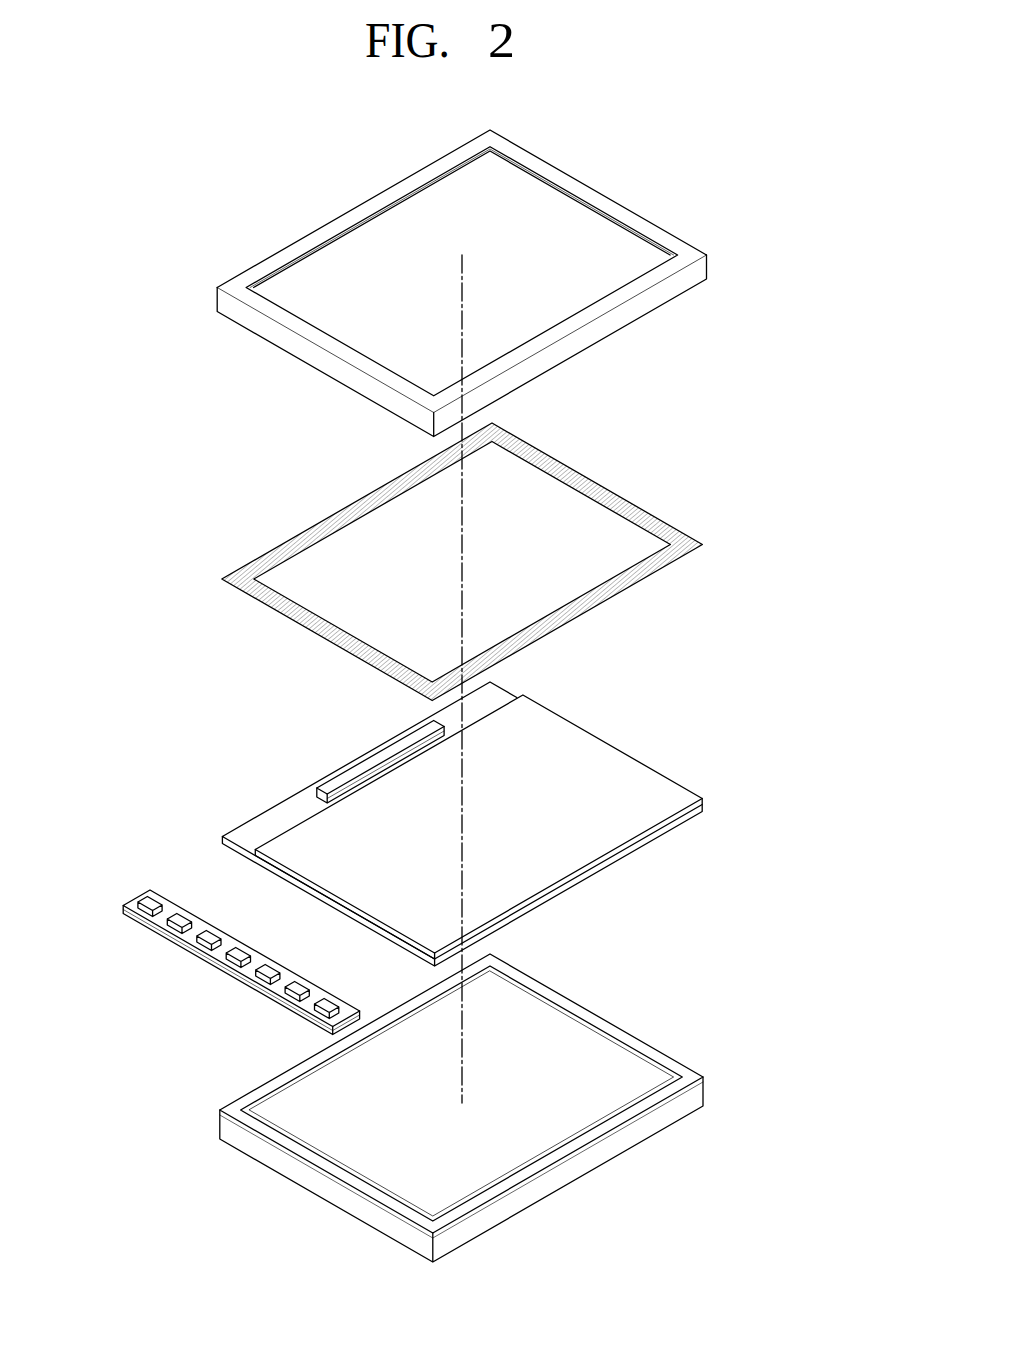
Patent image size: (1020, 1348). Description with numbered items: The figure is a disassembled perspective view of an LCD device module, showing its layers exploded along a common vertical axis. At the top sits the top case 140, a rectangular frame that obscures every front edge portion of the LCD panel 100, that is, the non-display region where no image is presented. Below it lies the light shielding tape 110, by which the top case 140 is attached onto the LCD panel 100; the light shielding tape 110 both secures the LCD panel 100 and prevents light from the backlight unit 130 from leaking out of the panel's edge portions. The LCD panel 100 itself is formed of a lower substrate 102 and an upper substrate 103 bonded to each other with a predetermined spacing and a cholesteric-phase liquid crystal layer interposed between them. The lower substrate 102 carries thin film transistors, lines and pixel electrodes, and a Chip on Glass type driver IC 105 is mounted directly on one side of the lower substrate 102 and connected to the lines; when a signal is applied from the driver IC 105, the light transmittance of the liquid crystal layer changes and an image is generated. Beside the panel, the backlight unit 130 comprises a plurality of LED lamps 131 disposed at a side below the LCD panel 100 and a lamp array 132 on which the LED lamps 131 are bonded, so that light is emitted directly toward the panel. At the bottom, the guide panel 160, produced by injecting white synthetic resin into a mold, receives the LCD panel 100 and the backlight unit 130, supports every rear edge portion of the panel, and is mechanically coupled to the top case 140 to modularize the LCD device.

The LCD panel 100 is at (517, 824).
The lower substrate 102 is at (702, 806).
The upper substrate 103 is at (702, 801).
The driver IC 105 is at (365, 763).
The light shielding tape 110 is at (612, 500).
The backlight unit 130 is at (202, 945).
The LED lamps 131 is at (92, 938).
The lamp array 132 is at (156, 919).
The top case 140 is at (603, 202).
The guide panel 160 is at (623, 1037).